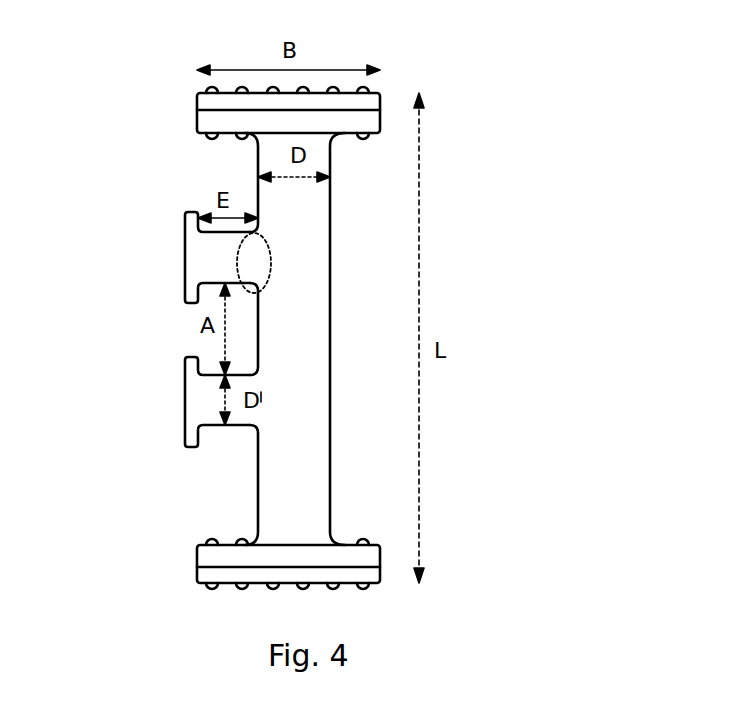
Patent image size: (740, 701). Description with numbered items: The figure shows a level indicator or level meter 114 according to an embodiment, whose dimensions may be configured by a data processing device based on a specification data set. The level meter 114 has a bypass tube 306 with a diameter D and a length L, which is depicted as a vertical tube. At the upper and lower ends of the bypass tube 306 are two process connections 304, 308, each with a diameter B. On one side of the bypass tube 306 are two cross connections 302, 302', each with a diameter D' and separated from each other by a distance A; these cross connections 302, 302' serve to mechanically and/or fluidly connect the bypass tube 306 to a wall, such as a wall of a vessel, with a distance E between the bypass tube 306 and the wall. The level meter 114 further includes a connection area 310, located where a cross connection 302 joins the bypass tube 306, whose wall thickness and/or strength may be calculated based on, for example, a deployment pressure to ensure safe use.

The level indicator or level meter 114 is at (542, 277).
The cross connection 302 is at (147, 261).
The cross connection 302' is at (145, 426).
The process connection 304 is at (208, 120).
The bypass tube 306 is at (310, 459).
The process connection 308 is at (358, 577).
The connection area 310 is at (272, 245).